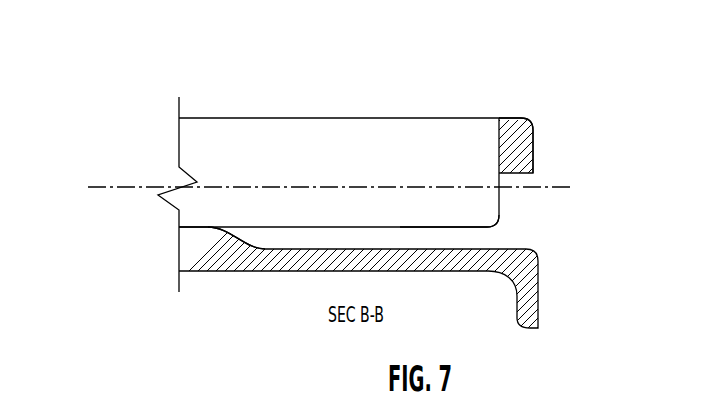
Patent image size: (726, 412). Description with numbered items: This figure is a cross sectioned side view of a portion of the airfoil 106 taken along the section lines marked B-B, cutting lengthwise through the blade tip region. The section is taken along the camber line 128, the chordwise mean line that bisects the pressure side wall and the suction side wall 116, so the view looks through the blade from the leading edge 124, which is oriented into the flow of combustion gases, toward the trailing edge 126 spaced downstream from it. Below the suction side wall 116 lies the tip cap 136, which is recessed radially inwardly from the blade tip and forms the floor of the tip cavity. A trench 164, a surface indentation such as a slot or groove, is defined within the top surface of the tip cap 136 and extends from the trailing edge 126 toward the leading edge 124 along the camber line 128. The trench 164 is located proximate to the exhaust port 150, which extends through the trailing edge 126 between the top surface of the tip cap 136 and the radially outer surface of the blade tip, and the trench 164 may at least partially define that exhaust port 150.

The airfoil 106 is at (531, 84).
The suction side wall 116 is at (303, 118).
The leading edge 124 is at (73, 258).
The trailing edge 126 is at (545, 143).
The camber line 128 is at (127, 185).
The tip cap 136 is at (155, 282).
The exhaust port 150 is at (504, 231).
The trench 164 is at (296, 239).